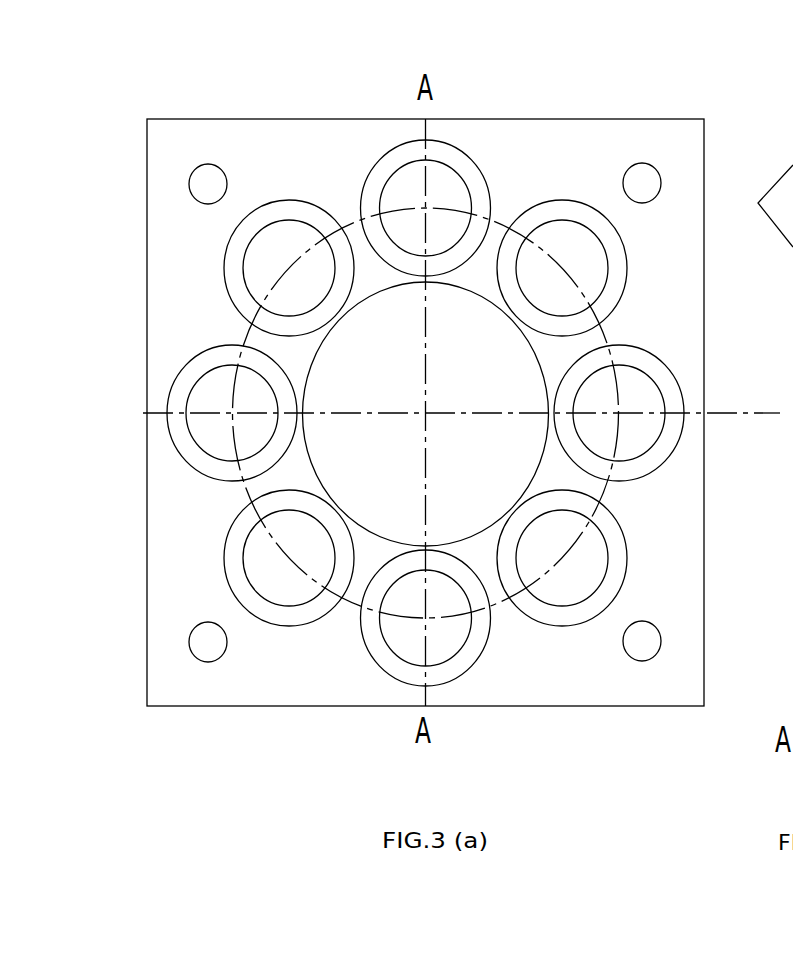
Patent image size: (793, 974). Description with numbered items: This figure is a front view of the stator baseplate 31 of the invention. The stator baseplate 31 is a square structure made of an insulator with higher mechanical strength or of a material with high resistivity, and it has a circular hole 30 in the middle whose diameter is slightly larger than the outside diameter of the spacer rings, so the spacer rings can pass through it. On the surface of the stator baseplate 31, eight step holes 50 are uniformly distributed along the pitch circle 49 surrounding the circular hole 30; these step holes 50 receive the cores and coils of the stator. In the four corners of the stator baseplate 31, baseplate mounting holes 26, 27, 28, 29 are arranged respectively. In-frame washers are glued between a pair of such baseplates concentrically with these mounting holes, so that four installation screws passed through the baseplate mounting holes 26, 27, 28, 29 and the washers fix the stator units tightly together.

The baseplate mounting hole 26 is at (208, 185).
The baseplate mounting hole 27 is at (642, 183).
The baseplate mounting hole 28 is at (642, 641).
The baseplate mounting hole 29 is at (208, 642).
The circular hole 30 is at (372, 434).
The stator baseplate 31 is at (312, 173).
The pitch circle 49 is at (605, 490).
The step hole 50 is at (617, 252).